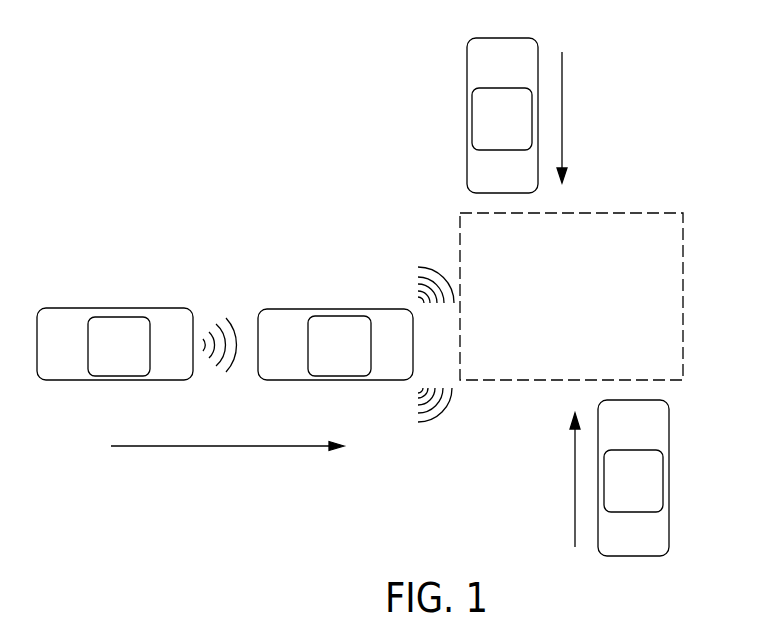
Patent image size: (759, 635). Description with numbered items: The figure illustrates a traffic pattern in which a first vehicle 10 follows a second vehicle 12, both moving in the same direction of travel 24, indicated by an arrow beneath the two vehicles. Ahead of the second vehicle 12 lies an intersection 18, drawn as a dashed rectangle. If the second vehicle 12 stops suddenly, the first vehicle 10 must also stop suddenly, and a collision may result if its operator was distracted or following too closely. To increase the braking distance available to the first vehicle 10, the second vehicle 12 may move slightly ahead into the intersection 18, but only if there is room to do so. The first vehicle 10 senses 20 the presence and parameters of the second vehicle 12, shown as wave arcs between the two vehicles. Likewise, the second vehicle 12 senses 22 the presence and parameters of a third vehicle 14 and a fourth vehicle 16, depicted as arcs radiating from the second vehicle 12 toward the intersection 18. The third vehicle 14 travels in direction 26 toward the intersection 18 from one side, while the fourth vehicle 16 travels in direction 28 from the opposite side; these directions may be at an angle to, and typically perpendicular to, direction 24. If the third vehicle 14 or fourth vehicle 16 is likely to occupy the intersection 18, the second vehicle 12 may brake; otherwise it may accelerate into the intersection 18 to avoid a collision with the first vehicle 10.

The first vehicle 10 is at (78, 309).
The second vehicle 12 is at (298, 309).
The third vehicle 14 is at (467, 78).
The fourth vehicle 16 is at (670, 440).
The intersection 18 is at (683, 268).
The sensing 20 is at (228, 330).
The sensing 22 is at (434, 278).
The direction of travel 24 is at (160, 447).
The direction 26 is at (562, 127).
The direction 28 is at (575, 488).